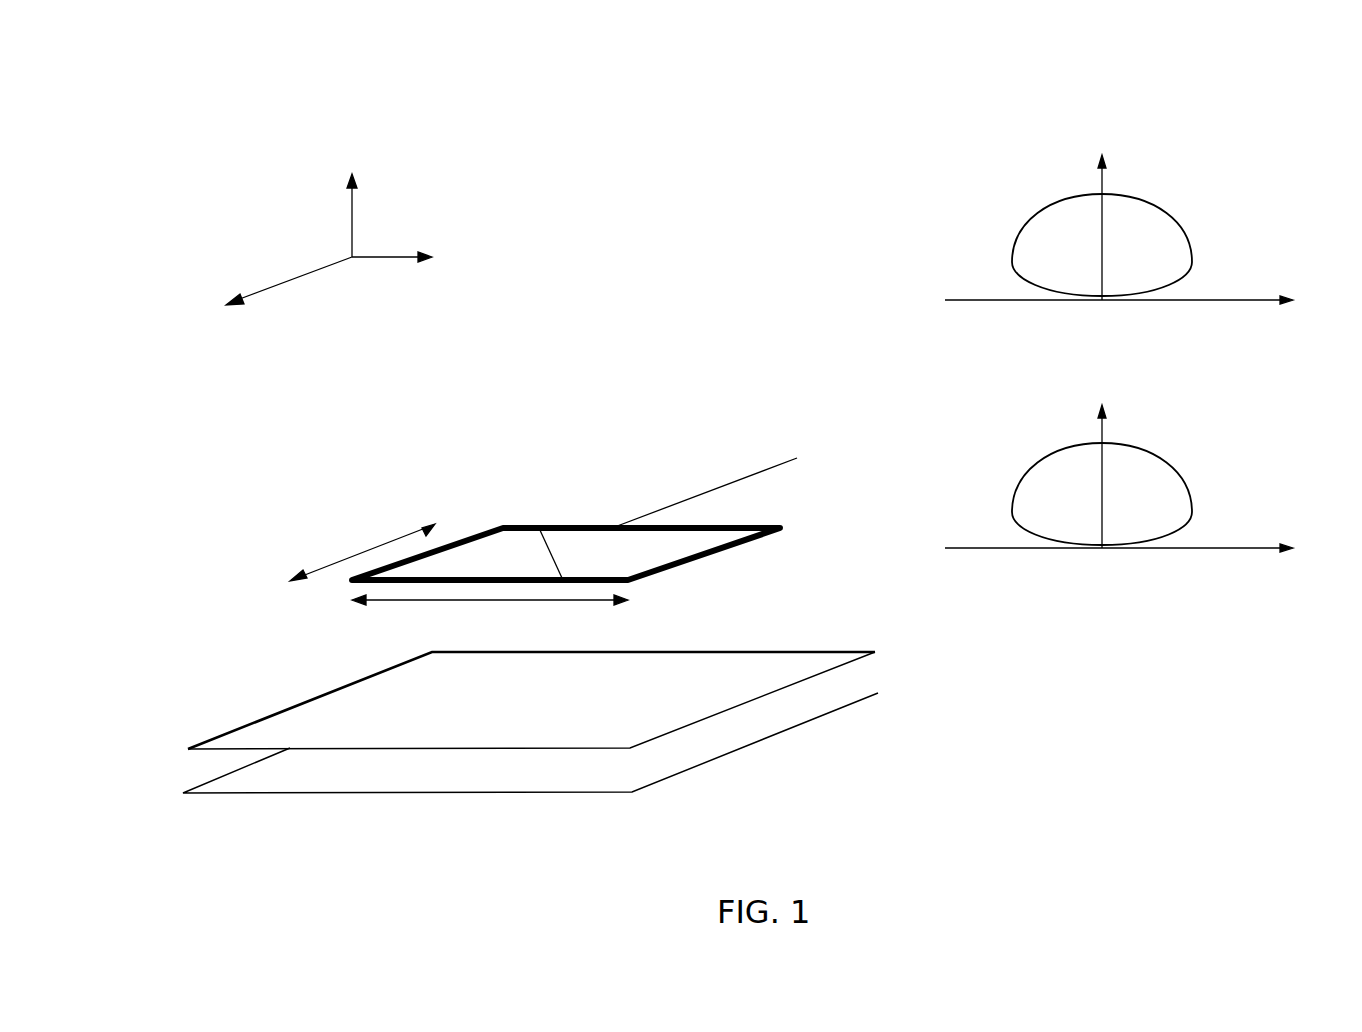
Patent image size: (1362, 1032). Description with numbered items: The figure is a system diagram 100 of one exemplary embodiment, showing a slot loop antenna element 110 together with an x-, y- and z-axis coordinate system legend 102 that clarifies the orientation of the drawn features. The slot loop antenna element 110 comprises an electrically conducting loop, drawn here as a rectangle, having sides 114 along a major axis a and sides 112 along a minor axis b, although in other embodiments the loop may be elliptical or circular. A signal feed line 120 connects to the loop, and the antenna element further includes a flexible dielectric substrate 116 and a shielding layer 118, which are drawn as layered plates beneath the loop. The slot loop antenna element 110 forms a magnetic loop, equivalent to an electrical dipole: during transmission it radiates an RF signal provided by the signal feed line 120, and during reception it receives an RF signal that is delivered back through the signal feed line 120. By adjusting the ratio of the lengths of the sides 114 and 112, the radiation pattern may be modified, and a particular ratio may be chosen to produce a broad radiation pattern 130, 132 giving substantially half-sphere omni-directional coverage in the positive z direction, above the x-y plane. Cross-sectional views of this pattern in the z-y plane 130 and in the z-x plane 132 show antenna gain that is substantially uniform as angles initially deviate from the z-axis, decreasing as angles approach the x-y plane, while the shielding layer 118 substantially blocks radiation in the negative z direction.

The system diagram 100 is at (773, 38).
The coordinate system legend 102 is at (290, 231).
The slot loop antenna element 110 is at (258, 508).
The sides along minor axis 112 is at (540, 528).
The sides along major axis 114 is at (481, 532).
The flexible dielectric substrate 116 is at (306, 698).
The shielding layer 118 is at (760, 740).
The signal feed line 120 is at (760, 470).
The radiation pattern in the z-y plane 130 is at (1028, 222).
The radiation pattern in the z-x plane 132 is at (1047, 458).